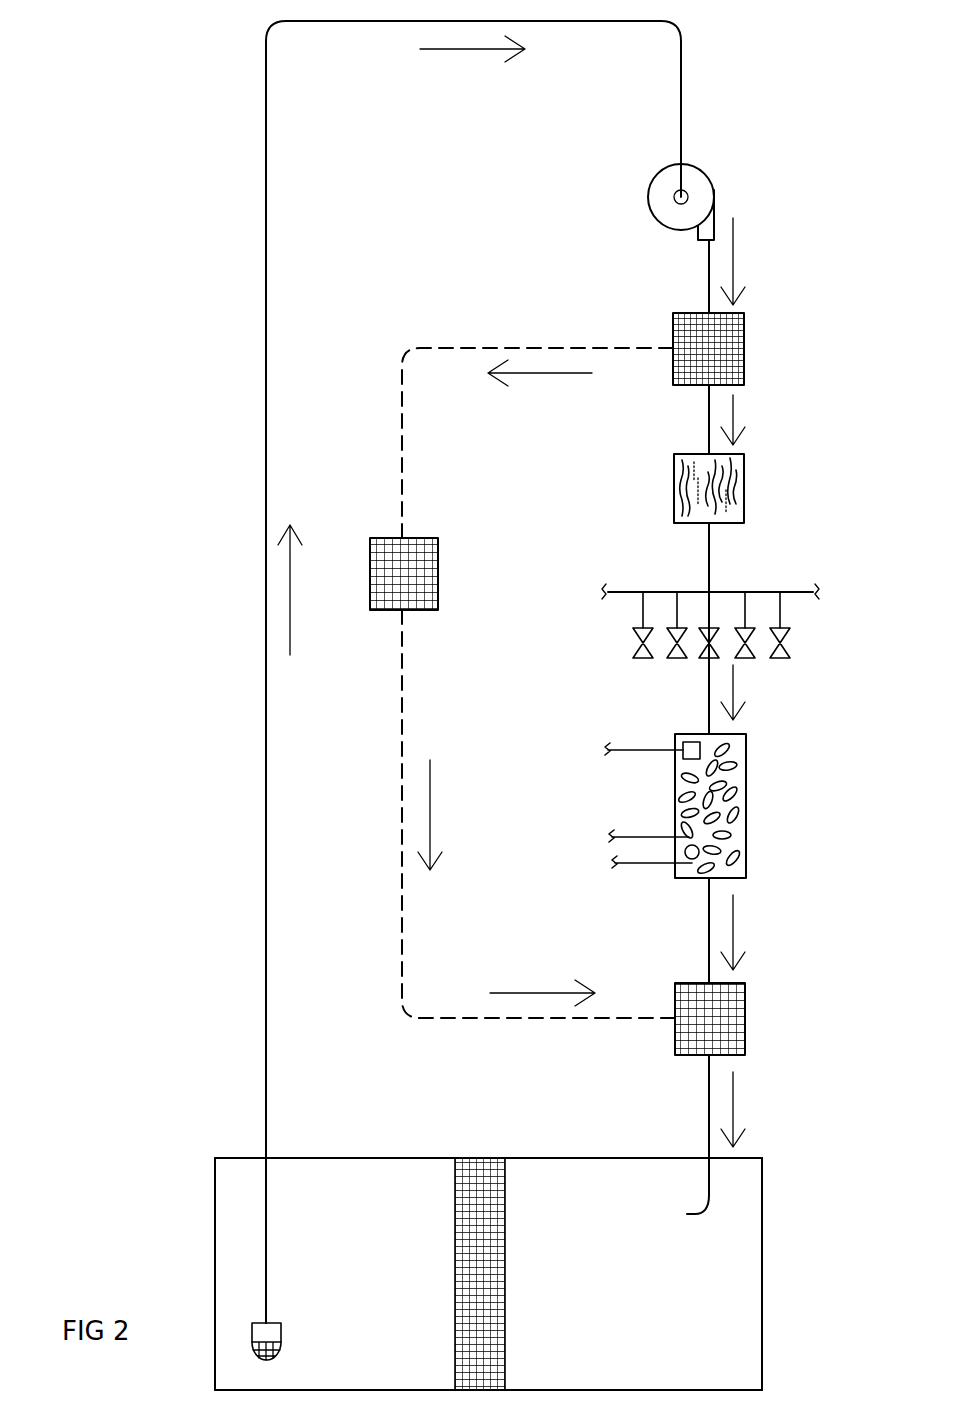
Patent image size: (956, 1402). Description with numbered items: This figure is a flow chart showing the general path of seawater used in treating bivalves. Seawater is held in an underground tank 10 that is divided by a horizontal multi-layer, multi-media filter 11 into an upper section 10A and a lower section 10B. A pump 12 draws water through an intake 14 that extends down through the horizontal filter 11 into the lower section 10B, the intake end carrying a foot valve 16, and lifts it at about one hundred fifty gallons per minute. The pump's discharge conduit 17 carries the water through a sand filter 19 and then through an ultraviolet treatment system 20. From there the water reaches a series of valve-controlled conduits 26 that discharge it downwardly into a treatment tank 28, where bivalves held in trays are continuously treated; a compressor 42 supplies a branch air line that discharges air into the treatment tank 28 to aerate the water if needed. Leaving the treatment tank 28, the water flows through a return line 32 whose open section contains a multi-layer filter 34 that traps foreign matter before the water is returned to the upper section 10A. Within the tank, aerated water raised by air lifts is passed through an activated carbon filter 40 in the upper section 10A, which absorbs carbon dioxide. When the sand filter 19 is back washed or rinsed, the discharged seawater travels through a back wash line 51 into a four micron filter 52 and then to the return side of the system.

The underground tank 10 is at (408, 1130).
The upper tank section 10A is at (762, 1196).
The lower tank section 10B is at (215, 1188).
The horizontal filter 11 is at (522, 1186).
The pump 12 is at (716, 197).
The intake 14 is at (266, 297).
The foot valve 16 is at (281, 1336).
The discharge conduit 17 is at (709, 285).
The sand filter 19 is at (744, 347).
The ultraviolet treatment system 20 is at (744, 488).
The conduits 26 is at (763, 592).
The treatment tank 28 is at (746, 808).
The return line 32 is at (709, 930).
The multi-layer filter 34 is at (745, 1018).
The activated carbon filter 40 is at (626, 849).
The compressor 42 is at (692, 741).
The back wash line 51 is at (403, 453).
The 4 micron filter 52 is at (438, 578).